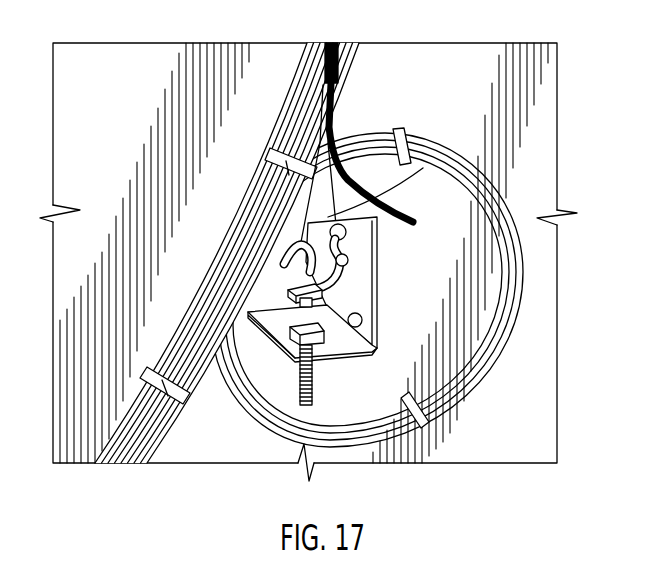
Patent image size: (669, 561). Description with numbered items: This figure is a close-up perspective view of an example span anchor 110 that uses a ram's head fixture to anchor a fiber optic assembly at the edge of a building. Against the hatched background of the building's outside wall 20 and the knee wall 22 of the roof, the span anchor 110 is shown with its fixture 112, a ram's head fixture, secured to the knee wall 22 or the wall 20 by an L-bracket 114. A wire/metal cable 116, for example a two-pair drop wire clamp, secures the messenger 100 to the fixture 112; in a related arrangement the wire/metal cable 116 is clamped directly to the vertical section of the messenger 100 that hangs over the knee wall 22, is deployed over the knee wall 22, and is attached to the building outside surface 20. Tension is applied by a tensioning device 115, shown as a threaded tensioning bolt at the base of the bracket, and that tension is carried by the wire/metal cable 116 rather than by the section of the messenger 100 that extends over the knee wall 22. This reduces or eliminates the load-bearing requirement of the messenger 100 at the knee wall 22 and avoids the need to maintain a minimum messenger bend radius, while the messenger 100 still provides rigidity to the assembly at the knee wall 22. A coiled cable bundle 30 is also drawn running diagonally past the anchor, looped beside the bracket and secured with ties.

The outside wall 20 is at (533, 119).
The knee wall 22 is at (304, 253).
The cable bundle 30 is at (278, 183).
The messenger 100 is at (337, 106).
The span anchor 110 is at (424, 289).
The fixture 112 is at (358, 272).
The L-bracket 114 is at (363, 244).
The tensioning device 115 is at (312, 378).
The wire/metal cable 116 is at (422, 165).